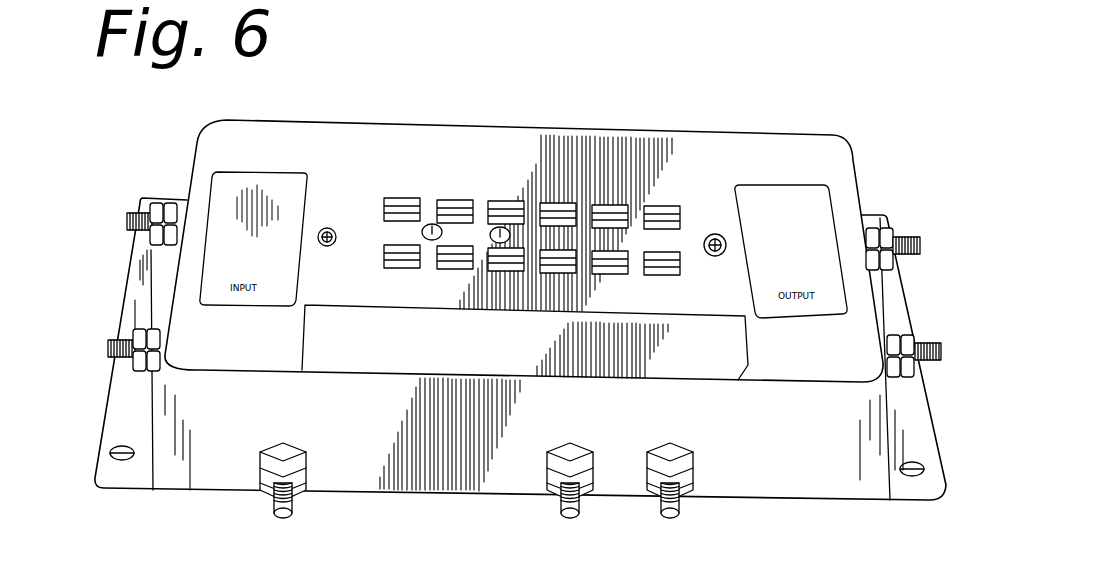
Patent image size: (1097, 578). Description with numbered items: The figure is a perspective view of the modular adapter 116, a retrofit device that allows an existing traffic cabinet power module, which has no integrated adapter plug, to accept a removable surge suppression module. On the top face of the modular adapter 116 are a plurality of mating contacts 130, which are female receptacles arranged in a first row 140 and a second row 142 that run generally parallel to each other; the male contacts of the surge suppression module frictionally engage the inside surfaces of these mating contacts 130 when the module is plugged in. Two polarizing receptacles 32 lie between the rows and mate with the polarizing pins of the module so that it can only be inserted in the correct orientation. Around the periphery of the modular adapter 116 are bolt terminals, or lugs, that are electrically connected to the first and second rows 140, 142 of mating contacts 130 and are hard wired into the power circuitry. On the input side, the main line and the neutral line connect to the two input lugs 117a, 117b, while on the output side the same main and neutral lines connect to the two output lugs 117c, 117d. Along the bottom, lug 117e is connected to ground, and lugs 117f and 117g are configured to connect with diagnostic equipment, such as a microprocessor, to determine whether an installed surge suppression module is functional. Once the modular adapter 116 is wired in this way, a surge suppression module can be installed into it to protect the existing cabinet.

The modular adapter 116 is at (703, 128).
The polarizing receptacles 32 is at (500, 226).
The mating contacts 130 is at (668, 262).
The second row 142 is at (697, 218).
The first row 140 is at (705, 267).
The input lug 117a is at (138, 206).
The input lug 117b is at (110, 342).
The output lug 117c is at (910, 230).
The output lug 117d is at (933, 340).
The ground lug 117e is at (277, 516).
The diagnostic lug 117f is at (562, 509).
The diagnostic lug 117g is at (680, 512).